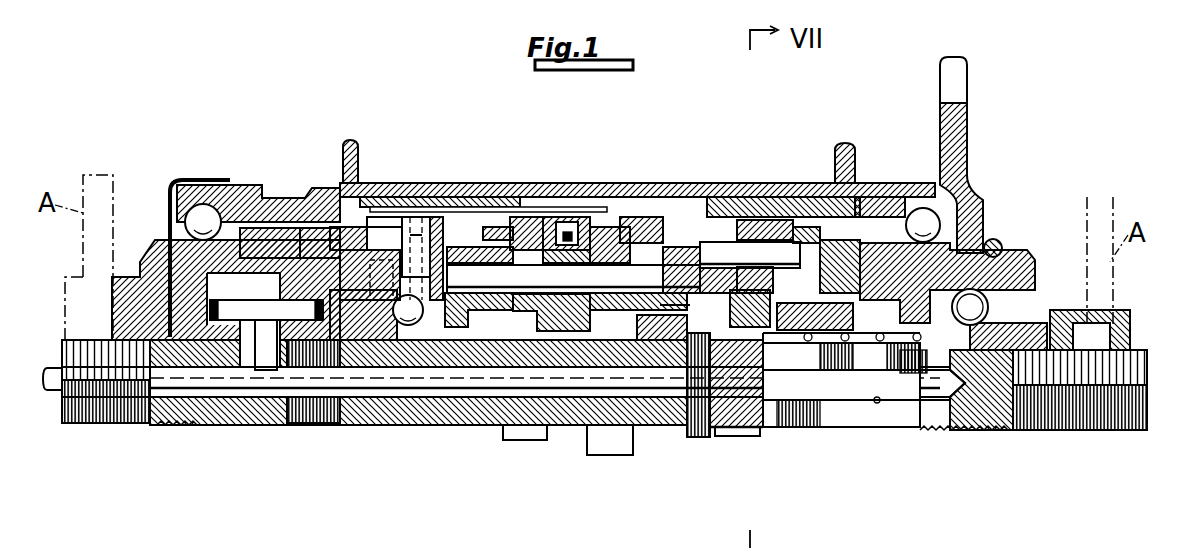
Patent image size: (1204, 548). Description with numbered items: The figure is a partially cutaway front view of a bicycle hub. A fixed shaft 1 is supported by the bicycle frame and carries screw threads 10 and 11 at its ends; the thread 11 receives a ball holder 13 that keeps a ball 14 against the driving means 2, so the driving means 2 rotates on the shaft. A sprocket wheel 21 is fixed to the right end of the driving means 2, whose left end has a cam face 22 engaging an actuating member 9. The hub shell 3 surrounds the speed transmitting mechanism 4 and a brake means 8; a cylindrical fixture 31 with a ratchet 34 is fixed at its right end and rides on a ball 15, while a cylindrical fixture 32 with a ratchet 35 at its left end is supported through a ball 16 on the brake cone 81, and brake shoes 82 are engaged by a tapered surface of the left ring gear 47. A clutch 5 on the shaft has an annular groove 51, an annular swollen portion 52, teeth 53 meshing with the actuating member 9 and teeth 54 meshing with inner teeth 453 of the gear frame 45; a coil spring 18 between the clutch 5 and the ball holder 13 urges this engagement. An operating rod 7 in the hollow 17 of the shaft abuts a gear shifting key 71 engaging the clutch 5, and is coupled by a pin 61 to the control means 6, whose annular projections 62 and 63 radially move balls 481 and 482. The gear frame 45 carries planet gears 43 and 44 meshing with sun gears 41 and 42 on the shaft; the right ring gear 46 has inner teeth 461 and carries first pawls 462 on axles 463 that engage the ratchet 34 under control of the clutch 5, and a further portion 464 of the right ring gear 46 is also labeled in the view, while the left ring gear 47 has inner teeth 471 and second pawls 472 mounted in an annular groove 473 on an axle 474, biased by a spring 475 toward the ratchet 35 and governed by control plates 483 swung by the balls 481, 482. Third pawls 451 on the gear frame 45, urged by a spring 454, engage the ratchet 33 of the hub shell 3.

The fixed shaft 1 is at (1140, 383).
The driving means 2 is at (1010, 262).
The hub shell 3 is at (735, 185).
The speed transmitting mechanism 4 is at (640, 245).
The clutch 5 is at (795, 345).
The control means 6 is at (365, 340).
The operating rod 7 is at (480, 398).
The brake means 8 is at (283, 235).
The actuating member 9 is at (840, 260).
The screw thread 10 is at (1040, 432).
The screw thread 11 is at (100, 425).
The ball holder 13 is at (1095, 300).
The ball 14 is at (988, 307).
The ball 15 is at (940, 215).
The ball 16 is at (200, 215).
The hollow 17 is at (880, 403).
The coil spring 18 is at (940, 352).
The sprocket wheel 21 is at (962, 128).
The cam face 22 is at (830, 275).
The cylindrical fixture 31 is at (915, 190).
The cylindrical fixture 32 is at (240, 195).
The ratchet 33 is at (580, 205).
The ratchet 34 is at (770, 225).
The ratchet 35 is at (480, 215).
The sun gear 41 is at (610, 332).
The sun gear 42 is at (540, 330).
The planet gear 43 is at (615, 225).
The planet gear 44 is at (500, 230).
The gear frame 45 is at (720, 230).
The right ring gear 46 is at (710, 220).
The left ring gear 47 is at (497, 225).
The annular groove 51 is at (740, 437).
The annular swollen portion 52 is at (722, 430).
The teeth 53 is at (830, 345).
The teeth 54 is at (662, 310).
The pin 61 is at (263, 365).
The annular projection 62 is at (360, 322).
The annular projection 63 is at (310, 341).
The gear shifting key 71 is at (697, 437).
The brake cone 81 is at (167, 240).
The brake shoe 82 is at (310, 240).
The third pawl 451 is at (568, 230).
The inner teeth 453 is at (675, 310).
The spring 454 is at (563, 248).
The inner teeth 461 is at (630, 225).
The first pawl 462 is at (772, 233).
The axle 463 is at (805, 225).
The block 464 is at (735, 240).
The inner teeth 471 is at (437, 222).
The second pawl 472 is at (440, 235).
The annular groove 473 is at (385, 205).
The axle 474 is at (452, 235).
The spring 475 is at (352, 150).
The ball 481 is at (414, 330).
The ball 482 is at (340, 300).
The control plate 483 is at (412, 250).